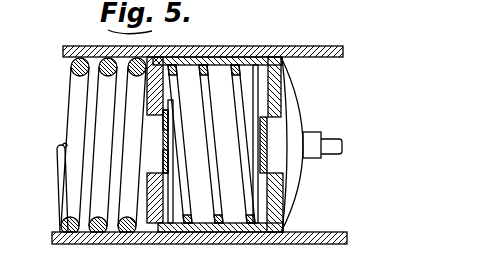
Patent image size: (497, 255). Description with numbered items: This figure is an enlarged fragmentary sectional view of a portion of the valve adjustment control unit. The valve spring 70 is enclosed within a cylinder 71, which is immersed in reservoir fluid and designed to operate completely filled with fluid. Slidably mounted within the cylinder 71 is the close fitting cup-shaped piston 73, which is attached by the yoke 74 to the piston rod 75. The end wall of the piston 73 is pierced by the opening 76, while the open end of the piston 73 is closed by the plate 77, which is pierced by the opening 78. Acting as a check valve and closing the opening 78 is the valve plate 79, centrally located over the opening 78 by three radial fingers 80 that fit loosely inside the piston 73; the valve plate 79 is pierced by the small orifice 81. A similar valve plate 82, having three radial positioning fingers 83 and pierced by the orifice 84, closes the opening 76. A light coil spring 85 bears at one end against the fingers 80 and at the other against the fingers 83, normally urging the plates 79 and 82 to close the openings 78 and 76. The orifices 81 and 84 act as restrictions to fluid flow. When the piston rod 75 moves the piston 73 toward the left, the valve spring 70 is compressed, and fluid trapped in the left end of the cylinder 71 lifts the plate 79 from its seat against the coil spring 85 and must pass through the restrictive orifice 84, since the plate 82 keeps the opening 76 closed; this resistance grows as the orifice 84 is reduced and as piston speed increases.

The valve spring 70 is at (67, 211).
The cylinder 71 is at (332, 234).
The cup-shaped piston 73 is at (212, 207).
The yoke 74 is at (299, 164).
The piston rod 75 is at (340, 141).
The opening 76 is at (285, 133).
The plate 77 is at (147, 91).
The opening 78 is at (164, 119).
The valve plate 79 is at (163, 164).
The radial fingers 80 is at (172, 198).
The orifice 81 is at (163, 147).
The valve plate 82 is at (263, 148).
The radial positioning fingers 83 is at (252, 89).
The orifice 84 is at (240, 149).
The coil spring 85 is at (203, 106).